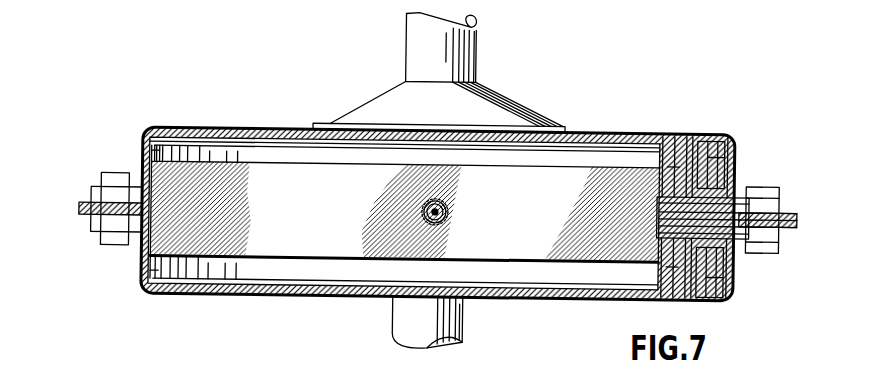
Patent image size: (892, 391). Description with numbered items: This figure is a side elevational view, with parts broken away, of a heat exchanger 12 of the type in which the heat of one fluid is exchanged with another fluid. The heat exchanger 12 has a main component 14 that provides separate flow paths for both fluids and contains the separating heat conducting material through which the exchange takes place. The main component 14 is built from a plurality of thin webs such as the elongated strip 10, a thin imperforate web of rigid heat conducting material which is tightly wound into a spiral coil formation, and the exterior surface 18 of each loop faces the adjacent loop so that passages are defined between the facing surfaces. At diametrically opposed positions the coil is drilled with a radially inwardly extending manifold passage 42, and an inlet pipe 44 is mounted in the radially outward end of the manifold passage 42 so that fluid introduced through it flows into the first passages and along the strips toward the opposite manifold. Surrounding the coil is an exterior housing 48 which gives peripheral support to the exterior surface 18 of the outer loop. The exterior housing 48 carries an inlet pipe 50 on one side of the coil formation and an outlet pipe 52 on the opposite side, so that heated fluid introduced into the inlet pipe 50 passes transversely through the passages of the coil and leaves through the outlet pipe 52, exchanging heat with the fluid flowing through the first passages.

The elongated strip 10 is at (298, 256).
The heat exchanger 12 is at (647, 68).
The main component 14 is at (241, 159).
The exterior surface 18 is at (287, 182).
The manifold passage 42 is at (448, 219).
The inlet pipe 44 is at (446, 222).
The exterior housing 48 is at (775, 118).
The inlet pipe 50 is at (475, 38).
The outlet pipe 52 is at (440, 336).